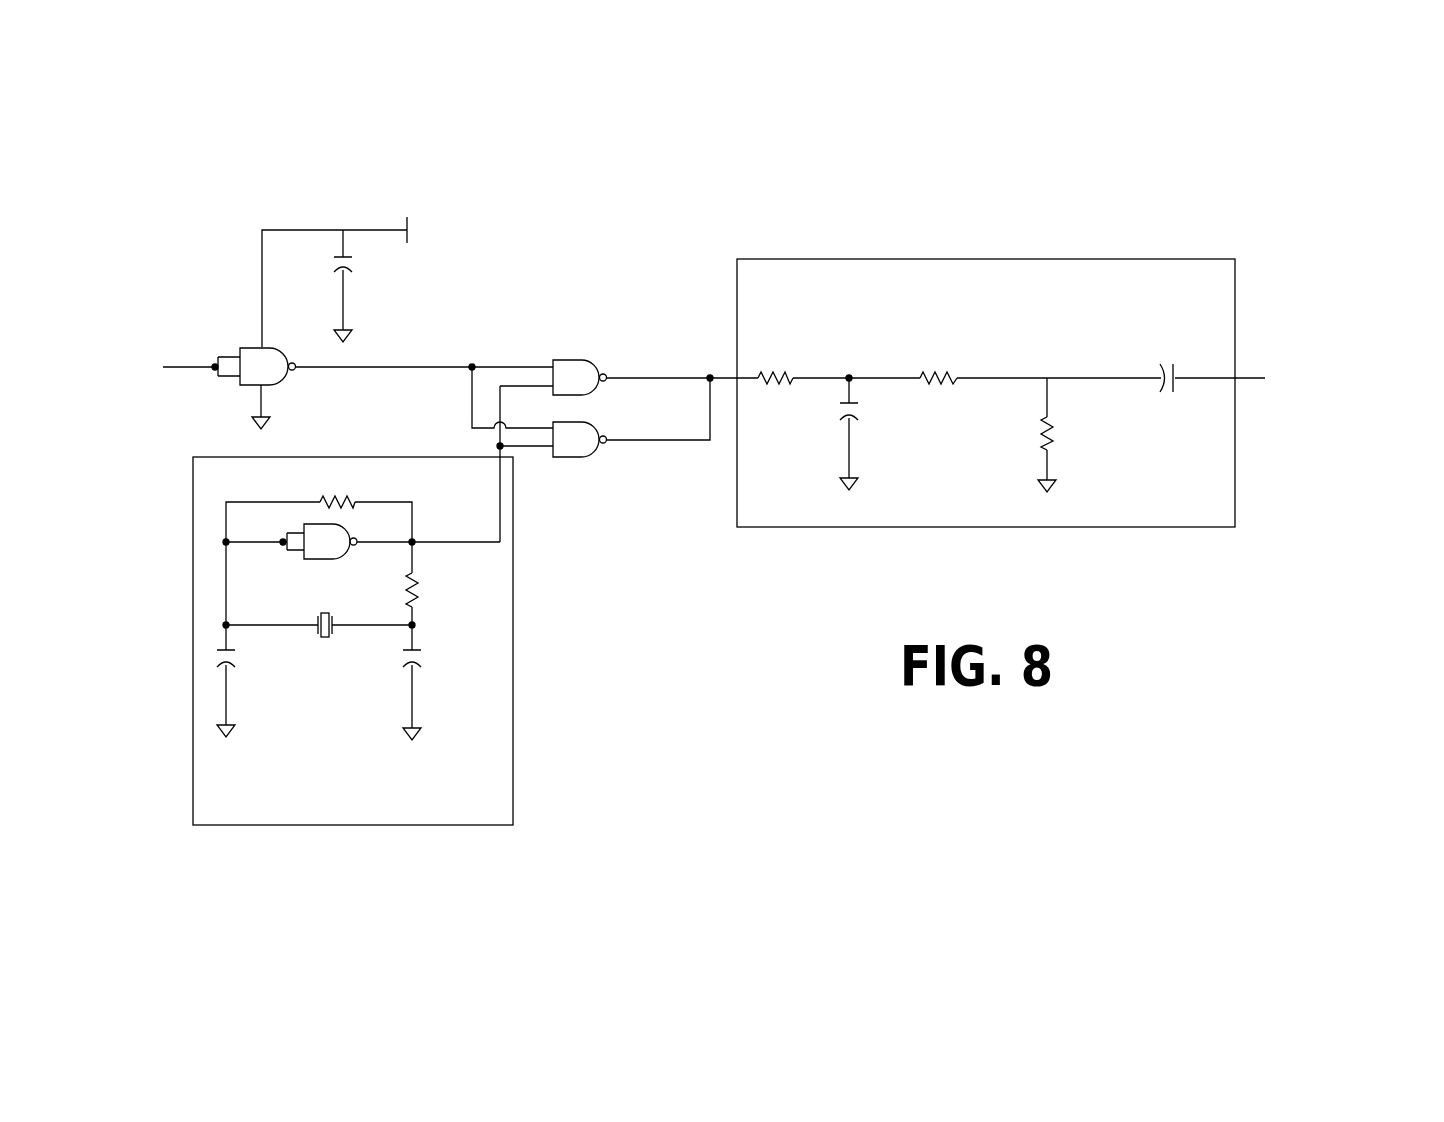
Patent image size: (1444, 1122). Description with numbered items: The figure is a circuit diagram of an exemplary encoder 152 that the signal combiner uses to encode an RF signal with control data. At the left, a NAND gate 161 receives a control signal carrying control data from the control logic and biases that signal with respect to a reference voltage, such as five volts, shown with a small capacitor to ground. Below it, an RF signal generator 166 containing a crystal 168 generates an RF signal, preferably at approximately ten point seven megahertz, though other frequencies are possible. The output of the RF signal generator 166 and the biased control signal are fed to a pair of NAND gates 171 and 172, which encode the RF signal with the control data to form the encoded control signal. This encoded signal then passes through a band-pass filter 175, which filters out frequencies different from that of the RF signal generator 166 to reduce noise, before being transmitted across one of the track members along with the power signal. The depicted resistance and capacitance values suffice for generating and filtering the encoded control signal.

The encoder 152 is at (963, 152).
The NAND gate 161 is at (259, 347).
The NAND gate 171 is at (562, 360).
The NAND gate 172 is at (562, 457).
The band-pass filter 175 is at (1017, 259).
The RF signal generator 166 is at (513, 643).
The crystal 168 is at (328, 637).